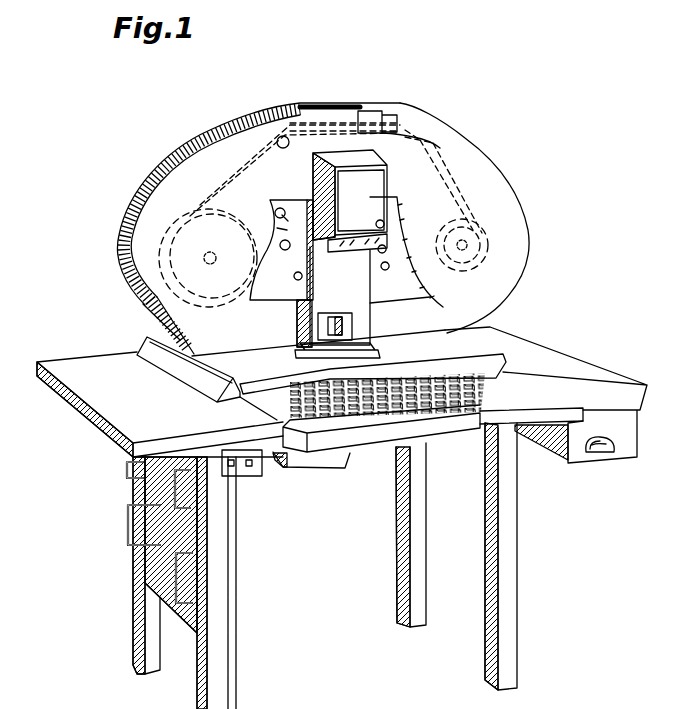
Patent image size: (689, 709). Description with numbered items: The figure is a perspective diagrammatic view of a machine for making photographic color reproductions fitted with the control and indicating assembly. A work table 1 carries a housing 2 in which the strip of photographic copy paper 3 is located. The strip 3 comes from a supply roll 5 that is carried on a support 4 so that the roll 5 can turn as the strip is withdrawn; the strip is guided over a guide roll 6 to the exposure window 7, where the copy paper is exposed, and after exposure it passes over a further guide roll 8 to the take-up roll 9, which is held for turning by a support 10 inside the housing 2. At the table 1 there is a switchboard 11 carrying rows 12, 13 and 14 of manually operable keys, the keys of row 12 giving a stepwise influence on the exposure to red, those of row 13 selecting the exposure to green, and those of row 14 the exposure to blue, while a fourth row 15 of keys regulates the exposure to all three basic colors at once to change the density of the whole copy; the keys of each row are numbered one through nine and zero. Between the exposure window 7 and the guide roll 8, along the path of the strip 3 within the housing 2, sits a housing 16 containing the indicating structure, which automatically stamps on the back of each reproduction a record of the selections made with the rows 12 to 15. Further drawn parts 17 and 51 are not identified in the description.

The work table 1 is at (83, 368).
The housing 2 is at (490, 180).
The strip of photographic copy paper 3 is at (210, 132).
The support 4 is at (214, 263).
The supply roll 5 is at (186, 273).
The guide roll 6 is at (283, 135).
The exposure window 7 is at (322, 122).
The guide roll 8 is at (438, 146).
The take-up roll 9 is at (490, 250).
The support 10 is at (464, 265).
The switchboard 11 is at (540, 397).
The row of keys 12 is at (373, 420).
The row of keys 13 is at (497, 376).
The row of keys 14 is at (265, 408).
The fourth row of keys 15 is at (431, 383).
The housing 16 is at (370, 112).
The leg 17 is at (585, 665).
The leg 51 is at (407, 576).